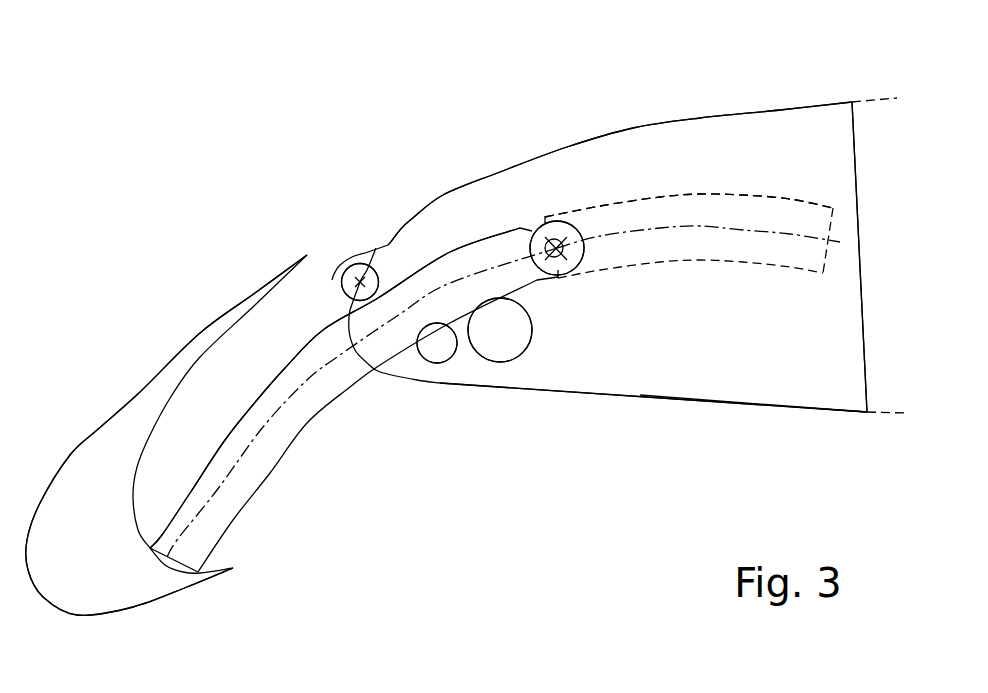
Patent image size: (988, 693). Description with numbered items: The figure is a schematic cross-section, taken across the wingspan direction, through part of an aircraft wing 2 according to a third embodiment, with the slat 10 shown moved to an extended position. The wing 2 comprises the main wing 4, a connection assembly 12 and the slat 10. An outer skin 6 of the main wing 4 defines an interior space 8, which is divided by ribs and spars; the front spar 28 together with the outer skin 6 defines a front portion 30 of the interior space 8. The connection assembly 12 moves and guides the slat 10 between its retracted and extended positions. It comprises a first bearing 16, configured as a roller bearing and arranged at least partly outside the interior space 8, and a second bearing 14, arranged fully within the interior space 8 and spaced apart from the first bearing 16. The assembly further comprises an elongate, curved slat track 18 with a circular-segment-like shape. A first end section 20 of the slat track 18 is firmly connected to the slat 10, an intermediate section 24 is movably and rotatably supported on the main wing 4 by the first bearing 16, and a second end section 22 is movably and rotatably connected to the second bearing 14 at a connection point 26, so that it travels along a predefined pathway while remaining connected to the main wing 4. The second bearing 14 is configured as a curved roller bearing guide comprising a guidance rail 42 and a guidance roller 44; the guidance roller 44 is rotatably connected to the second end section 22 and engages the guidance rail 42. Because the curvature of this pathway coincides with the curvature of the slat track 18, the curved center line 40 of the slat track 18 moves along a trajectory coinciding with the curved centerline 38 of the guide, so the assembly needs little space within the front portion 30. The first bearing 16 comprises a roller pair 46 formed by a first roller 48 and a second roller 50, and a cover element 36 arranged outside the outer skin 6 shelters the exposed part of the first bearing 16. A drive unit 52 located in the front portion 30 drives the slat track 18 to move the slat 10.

The wing 2 is at (352, 118).
The main wing 4 is at (740, 113).
The outer skin 6 is at (563, 147).
The interior space 8 is at (744, 332).
The slat 10 is at (72, 435).
The connection assembly 12 is at (485, 373).
The second bearing 14 is at (593, 200).
The first bearing 16 is at (386, 252).
The slat track 18 is at (308, 425).
The first end section 20 is at (217, 557).
The second end section 22 is at (505, 222).
The intermediate section 24 is at (320, 330).
The connection point 26 is at (567, 237).
The front spar 28 is at (867, 280).
The front portion 30 is at (795, 381).
The cover element 36 is at (350, 250).
The curved centerline of the roller bearing guide 38 is at (662, 233).
The curved center line of the slat track 40 is at (240, 452).
The guidance rail 42 is at (747, 187).
The guidance roller 44 is at (580, 273).
The roller pair 46 is at (445, 372).
The first roller 48 is at (386, 271).
The second roller 50 is at (423, 367).
The drive unit 52 is at (530, 355).